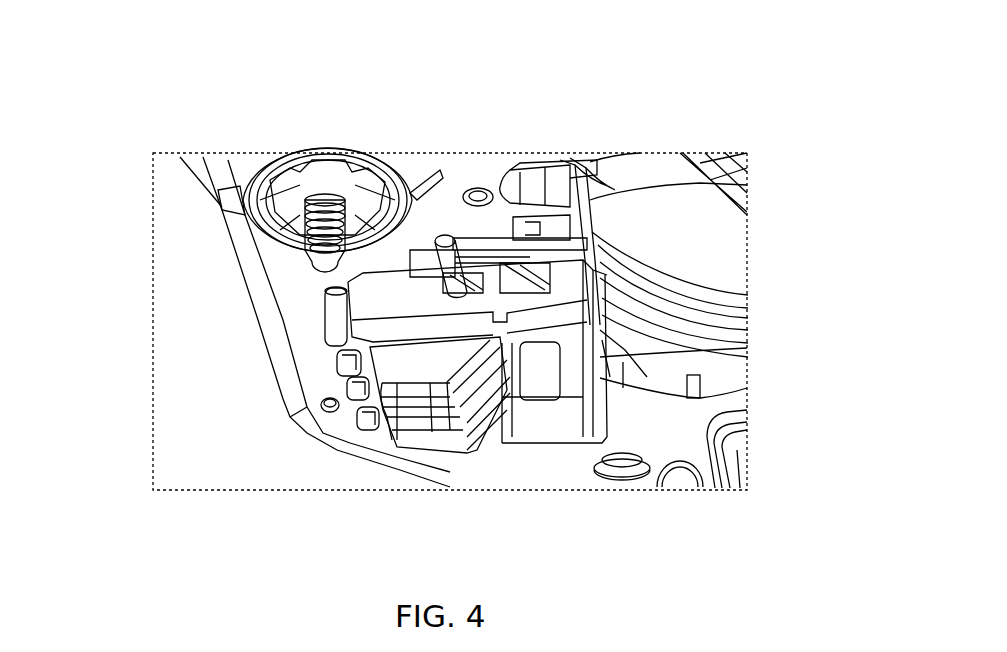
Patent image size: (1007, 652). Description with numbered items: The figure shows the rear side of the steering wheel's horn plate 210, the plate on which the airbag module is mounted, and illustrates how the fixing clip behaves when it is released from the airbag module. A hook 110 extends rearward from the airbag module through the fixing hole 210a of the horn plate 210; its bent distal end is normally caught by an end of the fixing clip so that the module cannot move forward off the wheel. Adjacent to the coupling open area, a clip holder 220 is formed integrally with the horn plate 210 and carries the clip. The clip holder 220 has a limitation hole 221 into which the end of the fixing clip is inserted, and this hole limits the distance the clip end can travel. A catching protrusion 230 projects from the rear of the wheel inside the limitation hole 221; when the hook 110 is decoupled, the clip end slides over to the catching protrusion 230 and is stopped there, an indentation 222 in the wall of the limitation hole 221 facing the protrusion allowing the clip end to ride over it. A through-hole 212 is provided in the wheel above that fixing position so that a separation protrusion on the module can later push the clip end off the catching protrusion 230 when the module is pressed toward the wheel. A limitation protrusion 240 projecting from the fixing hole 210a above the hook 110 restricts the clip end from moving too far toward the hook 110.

The hook 110 is at (330, 402).
The horn plate 210 is at (190, 317).
The fixing hole 210a is at (430, 287).
The through-hole 212 is at (747, 168).
The clip holder 220 is at (685, 325).
The limitation hole 221 is at (590, 240).
The indentation 222 is at (618, 283).
The catching protrusion 230 is at (483, 236).
The limitation protrusion 240 is at (433, 245).